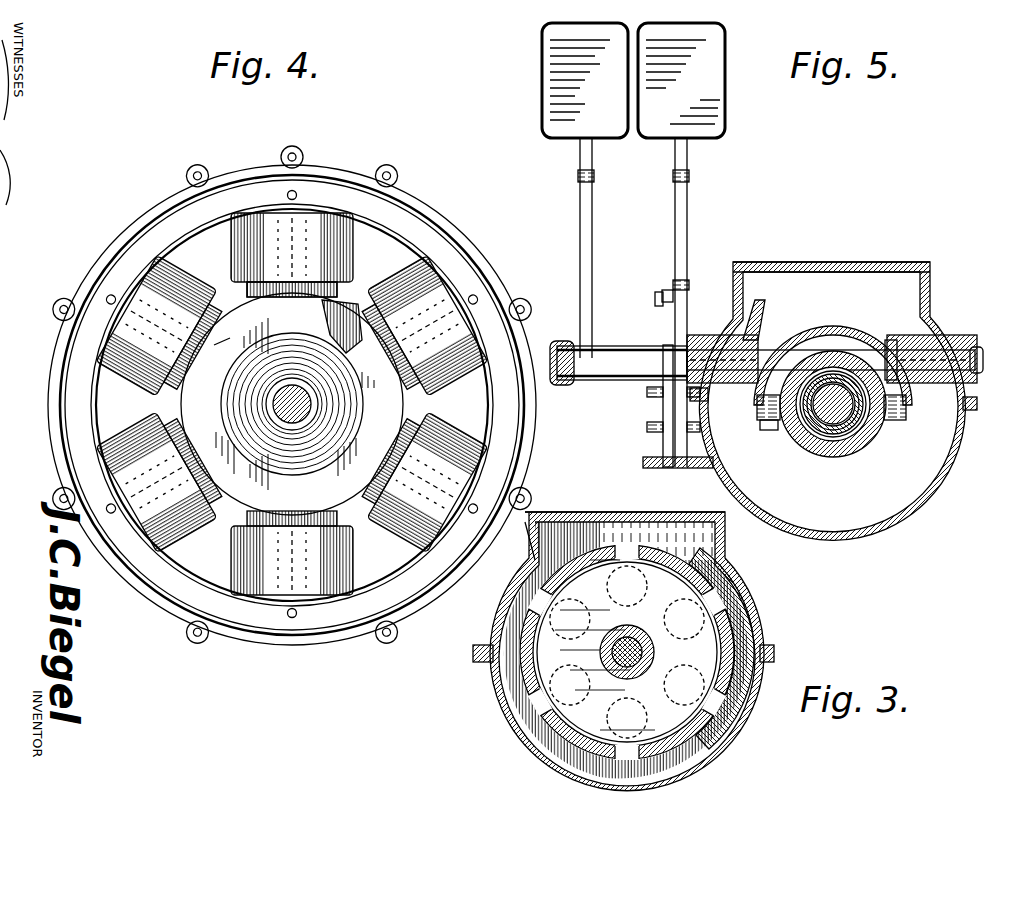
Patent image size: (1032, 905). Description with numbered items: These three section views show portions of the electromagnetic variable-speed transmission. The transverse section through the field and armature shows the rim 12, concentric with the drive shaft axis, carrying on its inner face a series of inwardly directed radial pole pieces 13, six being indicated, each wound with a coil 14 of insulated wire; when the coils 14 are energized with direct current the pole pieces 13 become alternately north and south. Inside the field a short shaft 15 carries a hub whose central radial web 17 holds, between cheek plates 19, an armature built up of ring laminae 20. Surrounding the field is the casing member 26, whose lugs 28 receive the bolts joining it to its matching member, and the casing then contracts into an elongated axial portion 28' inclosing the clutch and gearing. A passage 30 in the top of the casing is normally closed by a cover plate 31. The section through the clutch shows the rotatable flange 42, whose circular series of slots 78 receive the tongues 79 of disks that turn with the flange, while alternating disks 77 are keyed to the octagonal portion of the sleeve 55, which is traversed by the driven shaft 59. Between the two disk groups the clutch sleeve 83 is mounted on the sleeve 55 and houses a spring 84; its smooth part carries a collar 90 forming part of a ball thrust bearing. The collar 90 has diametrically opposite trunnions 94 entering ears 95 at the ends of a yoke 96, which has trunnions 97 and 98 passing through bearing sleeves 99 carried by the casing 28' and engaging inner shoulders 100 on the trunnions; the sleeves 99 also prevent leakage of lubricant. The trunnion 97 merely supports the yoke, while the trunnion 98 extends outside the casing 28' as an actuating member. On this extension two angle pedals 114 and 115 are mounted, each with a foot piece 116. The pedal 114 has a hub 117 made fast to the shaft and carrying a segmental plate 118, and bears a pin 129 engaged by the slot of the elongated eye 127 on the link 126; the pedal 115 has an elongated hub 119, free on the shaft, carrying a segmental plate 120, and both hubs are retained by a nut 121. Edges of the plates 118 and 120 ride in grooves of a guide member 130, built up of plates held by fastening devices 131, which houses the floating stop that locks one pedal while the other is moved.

In FIG. 4, the rim 12 is at (414, 216).
In FIG. 4, the pole pieces 13 is at (348, 291).
In FIG. 4, the coil 14 is at (300, 226).
In FIG. 4, the short shaft 15 is at (293, 418).
In FIG. 4, the central radial web 17 is at (322, 449).
In FIG. 4, the cheek plates 19 is at (215, 348).
In FIG. 4, the ring laminae 20 is at (335, 312).
In FIG. 4, the casing member 26 is at (274, 164).
In FIG. 4, the lugs 28 is at (291, 403).
In FIG. 5, the lugs 28 is at (834, 401).
In FIG. 3, the axially extended casing portion 28' is at (644, 651).
In FIG. 5, the axially extended casing portion 28' is at (833, 415).
In FIG. 3, the passage 30 is at (567, 514).
In FIG. 5, the passage 30 is at (806, 264).
In FIG. 3, the cover plate 31 is at (600, 513).
In FIG. 5, the cover plate 31 is at (872, 264).
In FIG. 3, the peripheral flange 42 is at (745, 710).
In FIG. 3, the sleeve 55 is at (648, 640).
In FIG. 3, the shaft 59 is at (620, 652).
In FIG. 5, the shaft 59 is at (812, 440).
In FIG. 3, the disks 77 is at (565, 716).
In FIG. 3, the slots 78 is at (508, 590).
In FIG. 3, the tongues 79 is at (538, 702).
In FIG. 5, the clutch sleeve 83 is at (848, 448).
In FIG. 5, the spring 84 is at (828, 441).
In FIG. 5, the collar 90 is at (870, 425).
In FIG. 5, the trunnions 94 is at (758, 405).
In FIG. 5, the ears 95 is at (770, 430).
In FIG. 5, the yoke 96 is at (833, 326).
In FIG. 5, the trunnion 97 is at (978, 356).
In FIG. 5, the trunnion 98 is at (738, 350).
In FIG. 5, the bearing sleeves 99 is at (714, 344).
In FIG. 5, the inner shoulders 100 is at (897, 348).
In FIG. 5, the angle pedal 114 is at (689, 245).
In FIG. 5, the angle pedal 115 is at (591, 243).
In FIG. 5, the foot piece 116 is at (545, 112).
In FIG. 5, the hub 117 is at (665, 346).
In FIG. 5, the segmental plate 118 is at (683, 470).
In FIG. 5, the elongated hub 119 is at (612, 378).
In FIG. 5, the segmental plate 120 is at (658, 470).
In FIG. 5, the nut 121 is at (562, 343).
In FIG. 5, the link 126 is at (690, 300).
In FIG. 5, the elongated eye 127 is at (672, 288).
In FIG. 5, the pin 129 is at (660, 298).
In FIG. 5, the guide member 130 is at (648, 447).
In FIG. 5, the fastening devices 131 is at (646, 428).